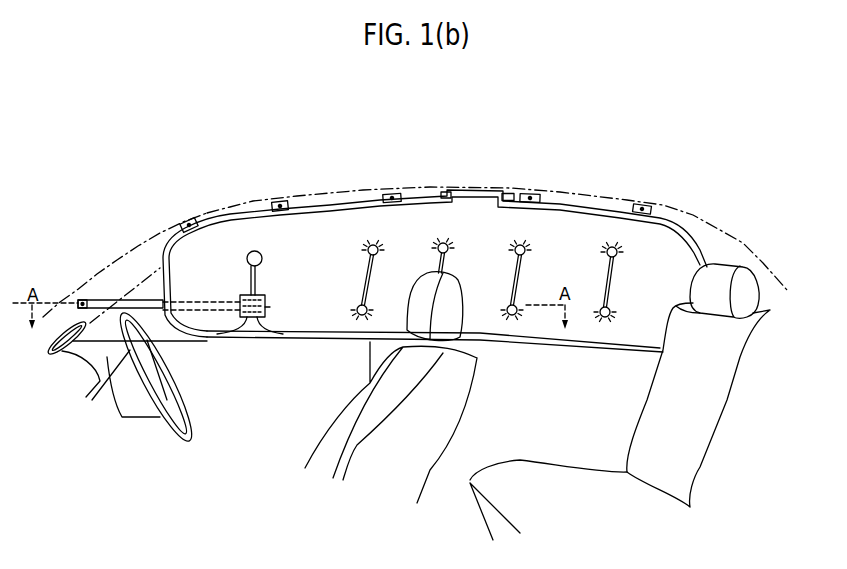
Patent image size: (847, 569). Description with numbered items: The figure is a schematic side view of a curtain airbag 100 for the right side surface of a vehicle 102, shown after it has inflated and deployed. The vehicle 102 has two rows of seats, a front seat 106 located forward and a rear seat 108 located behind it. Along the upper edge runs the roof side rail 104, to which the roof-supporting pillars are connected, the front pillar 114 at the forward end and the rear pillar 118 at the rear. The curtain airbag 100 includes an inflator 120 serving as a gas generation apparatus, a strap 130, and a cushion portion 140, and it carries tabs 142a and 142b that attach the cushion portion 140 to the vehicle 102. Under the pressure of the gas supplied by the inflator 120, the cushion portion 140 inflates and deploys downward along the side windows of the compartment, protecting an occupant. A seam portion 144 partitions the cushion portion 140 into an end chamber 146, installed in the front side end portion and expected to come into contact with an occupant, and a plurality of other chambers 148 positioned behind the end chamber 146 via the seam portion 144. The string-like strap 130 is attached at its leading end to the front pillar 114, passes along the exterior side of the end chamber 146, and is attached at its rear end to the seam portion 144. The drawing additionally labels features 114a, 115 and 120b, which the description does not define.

The curtain airbag 100 is at (589, 202).
The vehicle 102 is at (374, 256).
The roof side rail 104 is at (318, 197).
The front seat 106 is at (455, 392).
The rear seat 108 is at (715, 388).
The front pillar 114 is at (117, 262).
The front pillar garnish 114a is at (153, 273).
The door trim 115 is at (263, 398).
The rear pillar 118 is at (733, 253).
The inflator 120 is at (503, 194).
The front inflation chamber 120b is at (233, 247).
The strap 130 is at (82, 301).
The cushion portion 140 is at (417, 223).
The tab 142a is at (187, 224).
The tab 142b is at (277, 201).
The seam portion 144 is at (262, 258).
The end chamber 146 is at (215, 328).
The other chambers 148 is at (312, 314).